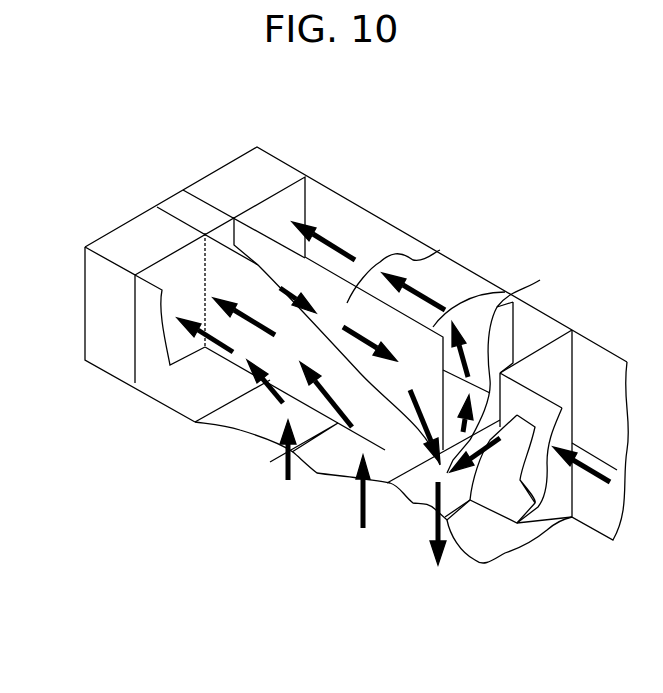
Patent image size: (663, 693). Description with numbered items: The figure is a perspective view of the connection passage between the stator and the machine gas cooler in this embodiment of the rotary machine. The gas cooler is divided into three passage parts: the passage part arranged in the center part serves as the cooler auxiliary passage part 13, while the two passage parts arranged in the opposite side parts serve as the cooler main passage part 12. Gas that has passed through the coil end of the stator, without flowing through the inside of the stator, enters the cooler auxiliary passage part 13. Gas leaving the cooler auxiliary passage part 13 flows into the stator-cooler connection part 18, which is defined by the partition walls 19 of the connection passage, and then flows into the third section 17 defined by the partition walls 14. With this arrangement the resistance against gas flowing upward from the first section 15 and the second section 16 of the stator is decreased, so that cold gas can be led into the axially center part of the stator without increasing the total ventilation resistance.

The cooler main passage part 12 is at (108, 332).
The cooler auxiliary passage part 13 is at (190, 207).
The partition walls 14 is at (232, 427).
The first section 15 is at (263, 480).
The air flow 16 is at (363, 528).
The third section 17 is at (430, 520).
The stator-cooler connection part 18 is at (440, 250).
The partition walls of the connection passage 19 is at (513, 345).